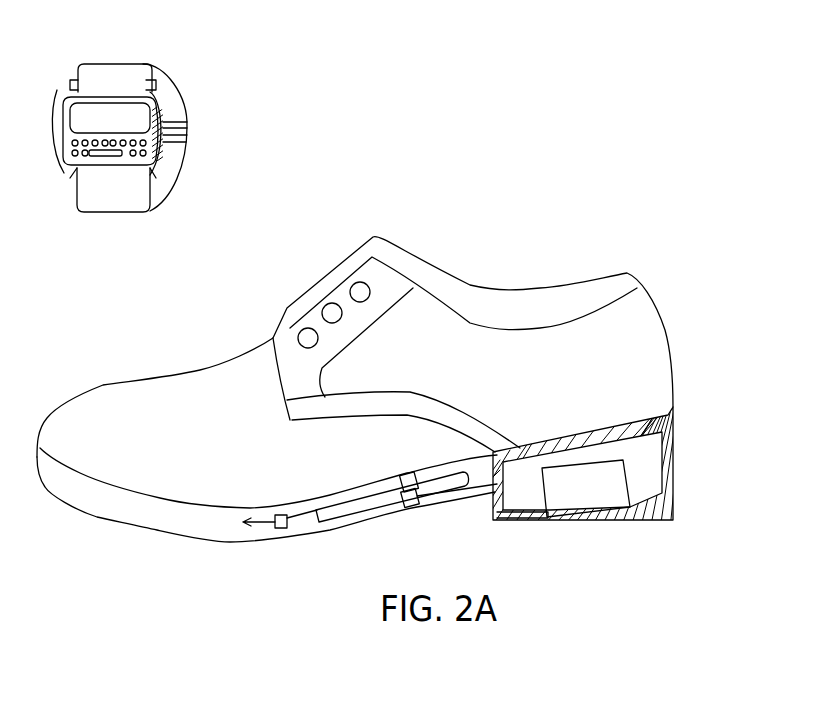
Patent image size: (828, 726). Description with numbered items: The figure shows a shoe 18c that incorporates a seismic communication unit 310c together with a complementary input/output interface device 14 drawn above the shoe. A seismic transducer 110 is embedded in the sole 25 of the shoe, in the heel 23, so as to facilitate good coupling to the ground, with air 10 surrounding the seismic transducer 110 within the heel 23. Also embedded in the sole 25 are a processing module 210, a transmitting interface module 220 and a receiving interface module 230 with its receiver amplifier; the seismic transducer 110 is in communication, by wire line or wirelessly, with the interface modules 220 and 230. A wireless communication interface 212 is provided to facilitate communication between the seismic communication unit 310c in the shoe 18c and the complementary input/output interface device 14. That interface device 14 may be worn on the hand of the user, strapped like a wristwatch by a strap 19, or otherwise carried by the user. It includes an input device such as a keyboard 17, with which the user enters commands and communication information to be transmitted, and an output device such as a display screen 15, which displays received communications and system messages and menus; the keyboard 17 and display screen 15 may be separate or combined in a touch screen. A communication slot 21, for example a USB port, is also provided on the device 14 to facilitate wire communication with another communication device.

The complementary input/output interface device 14 is at (140, 143).
The display screen 15 is at (140, 115).
The keyboard 17 is at (150, 155).
The strap 19 is at (120, 203).
The communication slot 21 is at (165, 140).
The shoe 18c is at (103, 386).
The seismic communication unit 310c is at (618, 228).
The air 10 is at (580, 443).
The heel 23 is at (513, 520).
The seismic transducer 110 is at (577, 510).
The sole 25 is at (157, 531).
The processing module 210 is at (330, 527).
The wireless communication interface 212 is at (282, 530).
The transmitting interface module 220 is at (410, 513).
The receiving interface module 230 is at (413, 473).